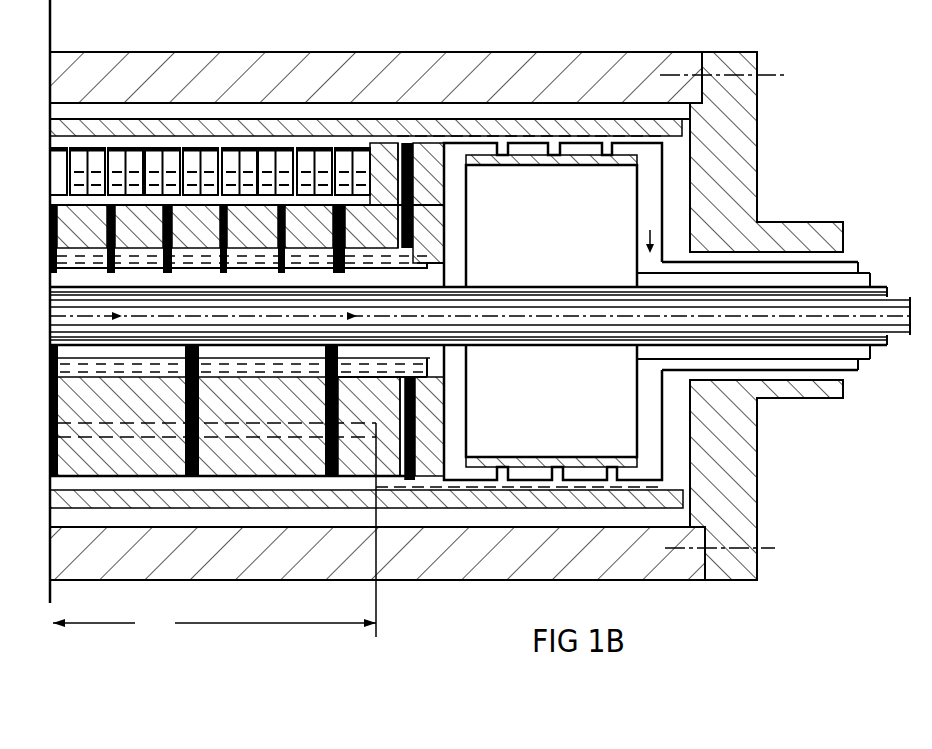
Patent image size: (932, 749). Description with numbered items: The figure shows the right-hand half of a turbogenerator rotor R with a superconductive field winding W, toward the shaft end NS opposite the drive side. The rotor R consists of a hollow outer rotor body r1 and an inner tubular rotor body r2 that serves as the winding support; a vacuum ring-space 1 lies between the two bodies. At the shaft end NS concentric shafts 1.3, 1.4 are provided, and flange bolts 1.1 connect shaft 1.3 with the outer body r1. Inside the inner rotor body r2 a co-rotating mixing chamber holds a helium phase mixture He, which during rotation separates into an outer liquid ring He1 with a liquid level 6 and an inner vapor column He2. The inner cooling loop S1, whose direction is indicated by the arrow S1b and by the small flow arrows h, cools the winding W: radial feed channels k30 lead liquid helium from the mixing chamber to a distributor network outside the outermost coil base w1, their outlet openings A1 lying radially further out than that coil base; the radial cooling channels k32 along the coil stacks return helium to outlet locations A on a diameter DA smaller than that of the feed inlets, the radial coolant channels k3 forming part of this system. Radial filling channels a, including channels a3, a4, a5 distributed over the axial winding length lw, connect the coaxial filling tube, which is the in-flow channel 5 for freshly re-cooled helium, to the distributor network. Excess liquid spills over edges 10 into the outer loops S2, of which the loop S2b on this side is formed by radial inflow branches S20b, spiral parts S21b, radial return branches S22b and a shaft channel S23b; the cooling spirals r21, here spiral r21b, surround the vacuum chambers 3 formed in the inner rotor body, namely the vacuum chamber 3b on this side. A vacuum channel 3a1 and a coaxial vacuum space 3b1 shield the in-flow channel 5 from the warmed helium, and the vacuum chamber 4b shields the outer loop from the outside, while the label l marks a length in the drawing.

The rotor R is at (437, 55).
The outer rotor body r1 is at (585, 62).
The flange bolts 1.1 is at (760, 75).
The shaft 1.3 is at (785, 228).
The shaft 1.4 is at (848, 352).
The vacuum ring-space 1 is at (175, 115).
The inner cooling loop S1 is at (83, 135).
The flow direction arrow S1b is at (243, 8).
The coolant loop S2b is at (605, 136).
The radially outermost coil base w1 is at (137, 160).
The field winding W is at (303, 160).
The rotor 3 is at (58, 4).
The radial coolant channels k3 is at (88, 170).
The radial cooling channels k32 is at (358, 175).
The outer ring of liquid helium He1 is at (136, 256).
The inner helium vapor column He2 is at (192, 277).
The diameter of outlet locations DA is at (280, 316).
The outlet locations A is at (333, 278).
The in-flow channel 5 is at (589, 290).
The vacuum channel 3a1 is at (498, 290).
The coaxial vacuum space 3b1 is at (803, 340).
The length l is at (582, 314).
The shaft end opposite the drive side NS is at (915, 258).
The cooling spirals r21 is at (588, 490).
The cooling spiral r21b is at (457, 207).
The vacuum chamber 3b is at (551, 406).
The radial inflow branches S20b is at (460, 180).
The spiral parts S21b is at (536, 150).
The radial return branches S22b is at (647, 158).
The radial feed channels k30 is at (387, 230).
The helium phase mixture He is at (407, 278).
The shaft channel S23b is at (723, 250).
The vacuum chamber 4b is at (682, 443).
The edges 10 is at (435, 353).
The radial filling channel a3 is at (60, 400).
The radial filling channel a4 is at (216, 418).
The radial filling channel a5 is at (356, 428).
The outlet openings A1 is at (408, 482).
The inner rotor body r2 is at (433, 482).
The outer loops S2 is at (523, 482).
The radial filling channels a is at (240, 455).
The flow arrows h is at (140, 268).
The liquid level 6 is at (150, 276).
The axial length of the winding lw is at (214, 531).